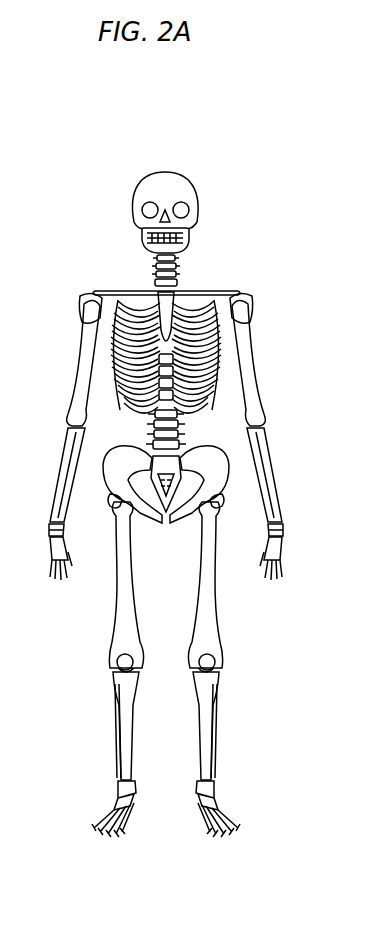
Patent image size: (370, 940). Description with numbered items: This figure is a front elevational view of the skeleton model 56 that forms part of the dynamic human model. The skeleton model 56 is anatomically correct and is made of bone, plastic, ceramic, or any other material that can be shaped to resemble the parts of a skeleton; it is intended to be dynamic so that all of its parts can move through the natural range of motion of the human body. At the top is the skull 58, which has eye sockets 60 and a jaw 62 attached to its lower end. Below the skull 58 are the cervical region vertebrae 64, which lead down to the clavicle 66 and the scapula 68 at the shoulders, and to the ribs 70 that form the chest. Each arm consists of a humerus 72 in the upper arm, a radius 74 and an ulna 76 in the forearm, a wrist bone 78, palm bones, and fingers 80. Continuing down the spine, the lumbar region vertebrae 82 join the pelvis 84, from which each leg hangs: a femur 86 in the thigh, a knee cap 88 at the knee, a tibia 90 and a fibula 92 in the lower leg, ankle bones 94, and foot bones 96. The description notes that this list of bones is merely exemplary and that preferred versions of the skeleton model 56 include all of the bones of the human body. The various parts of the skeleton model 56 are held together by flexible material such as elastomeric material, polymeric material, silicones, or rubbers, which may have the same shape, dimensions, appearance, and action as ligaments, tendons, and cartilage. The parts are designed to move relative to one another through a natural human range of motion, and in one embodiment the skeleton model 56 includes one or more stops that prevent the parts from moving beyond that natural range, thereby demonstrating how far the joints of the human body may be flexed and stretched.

The skeleton model 56 is at (279, 224).
The skull 58 is at (150, 196).
The eye sockets 60 is at (184, 210).
The jaw 62 is at (148, 243).
The cervical region vertebrae 64 is at (152, 268).
The clavicle 66 is at (226, 293).
The scapula 68 is at (95, 297).
The ribs 70 is at (222, 356).
The humerus 72 is at (82, 322).
The radius 74 is at (262, 428).
The ulna 76 is at (272, 462).
The wrist bone 78 is at (282, 530).
The fingers 80 is at (54, 566).
The lumbar region vertebrae 82 is at (158, 420).
The pelvis 84 is at (118, 470).
The femur 86 is at (209, 602).
The knee cap 88 is at (207, 662).
The tibia 90 is at (206, 690).
The fibula 92 is at (215, 730).
The ankle bones 94 is at (215, 786).
The foot bones 96 is at (236, 814).